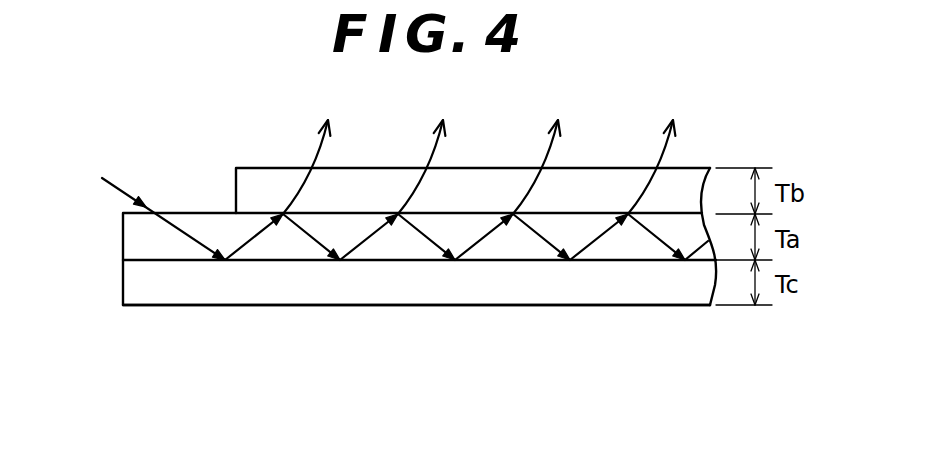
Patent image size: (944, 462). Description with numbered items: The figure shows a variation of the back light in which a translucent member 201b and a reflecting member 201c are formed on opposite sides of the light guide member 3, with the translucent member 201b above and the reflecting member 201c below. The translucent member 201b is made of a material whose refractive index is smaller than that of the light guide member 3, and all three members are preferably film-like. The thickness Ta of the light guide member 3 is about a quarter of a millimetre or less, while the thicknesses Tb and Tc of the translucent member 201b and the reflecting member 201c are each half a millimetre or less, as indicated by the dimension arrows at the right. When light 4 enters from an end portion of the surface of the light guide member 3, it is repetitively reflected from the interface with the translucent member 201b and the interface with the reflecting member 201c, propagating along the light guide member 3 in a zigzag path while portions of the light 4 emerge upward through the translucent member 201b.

The light guide member 3 is at (152, 245).
The light 4 is at (394, 190).
The translucent member 201b is at (273, 187).
The reflecting member 201c is at (357, 288).